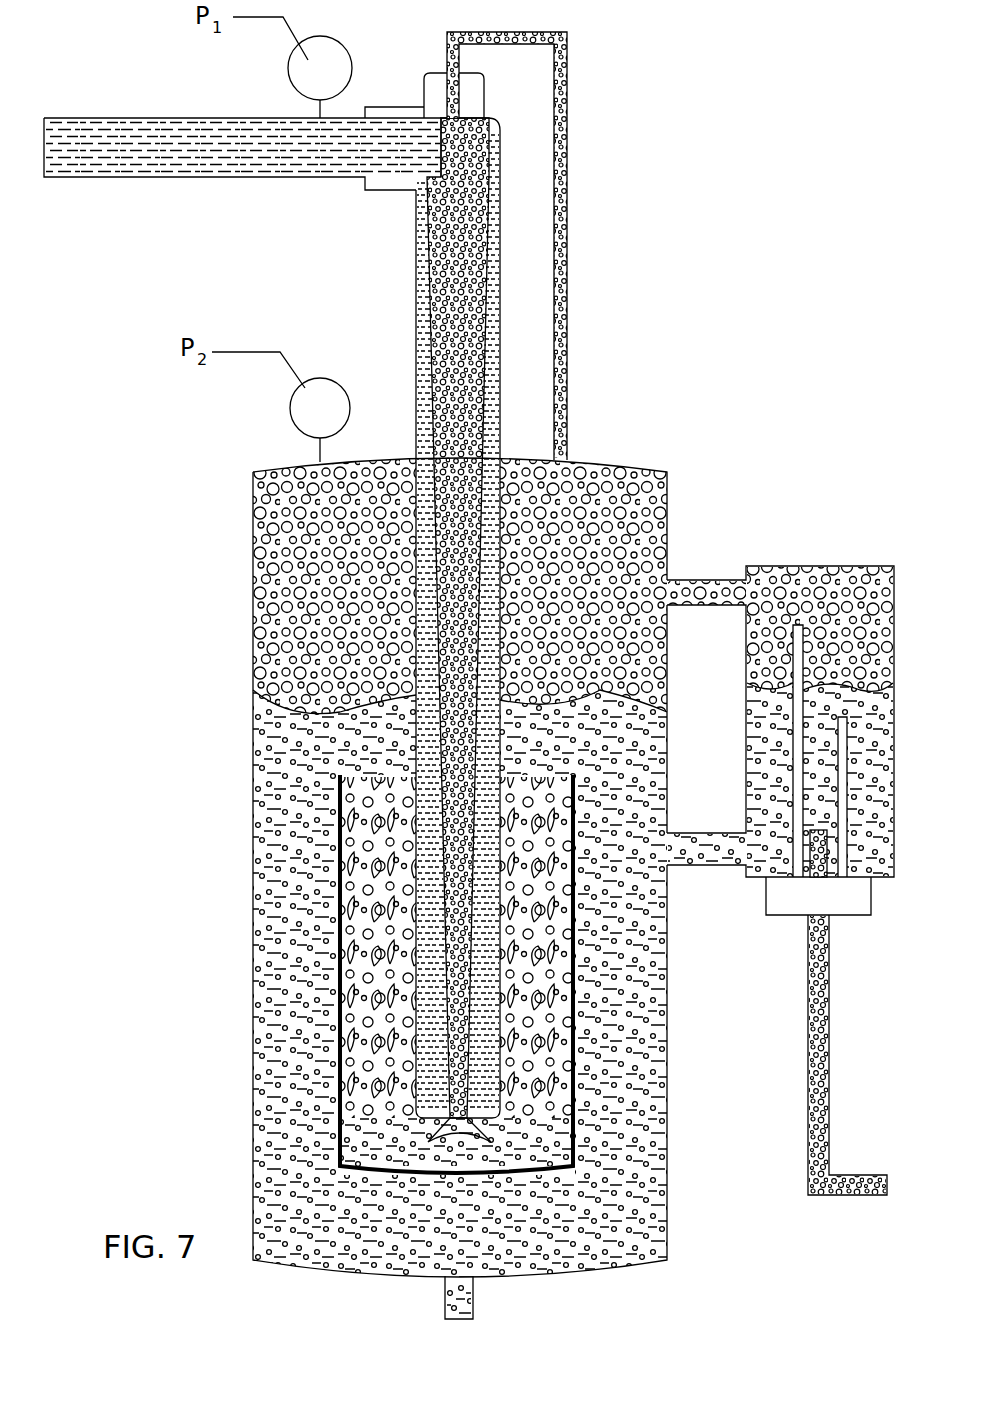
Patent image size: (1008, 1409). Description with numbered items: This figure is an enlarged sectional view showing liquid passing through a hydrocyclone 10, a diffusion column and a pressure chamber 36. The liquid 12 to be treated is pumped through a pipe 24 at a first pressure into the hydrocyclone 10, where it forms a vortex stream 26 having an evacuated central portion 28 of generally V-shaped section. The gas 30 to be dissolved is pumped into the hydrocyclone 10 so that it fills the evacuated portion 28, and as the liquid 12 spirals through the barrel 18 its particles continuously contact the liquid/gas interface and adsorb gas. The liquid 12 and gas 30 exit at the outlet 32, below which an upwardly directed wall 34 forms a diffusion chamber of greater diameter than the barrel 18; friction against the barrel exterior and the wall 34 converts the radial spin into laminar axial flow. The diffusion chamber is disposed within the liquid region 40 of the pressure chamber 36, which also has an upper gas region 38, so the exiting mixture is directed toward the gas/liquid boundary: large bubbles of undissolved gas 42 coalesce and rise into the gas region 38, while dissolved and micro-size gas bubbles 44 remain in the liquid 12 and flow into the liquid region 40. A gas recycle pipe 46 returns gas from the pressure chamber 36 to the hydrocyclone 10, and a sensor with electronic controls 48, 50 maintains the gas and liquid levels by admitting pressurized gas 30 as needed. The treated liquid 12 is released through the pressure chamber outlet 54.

The hydrocyclone 10 is at (408, 247).
The liquid 12 is at (132, 140).
The barrel 18 is at (424, 327).
The pipe 24 is at (207, 118).
The vortex stream 26 is at (422, 293).
The evacuated central portion 28 is at (467, 262).
The gas 30 is at (808, 1000).
The outlet 32 is at (480, 1122).
The diffusion chamber wall 34 is at (338, 1045).
The pressure chamber 36 is at (243, 637).
The upper gas region 38 is at (291, 537).
The lower liquid region 40 is at (280, 978).
The large bubbles of undissolved gas 42 is at (300, 720).
The micro-size gas bubbles 44 is at (288, 905).
The gas recycle pipe 46 is at (568, 354).
The sensor 48 is at (780, 760).
The separator chamber 50 is at (802, 905).
The pressure chamber outlet 54 is at (468, 1310).